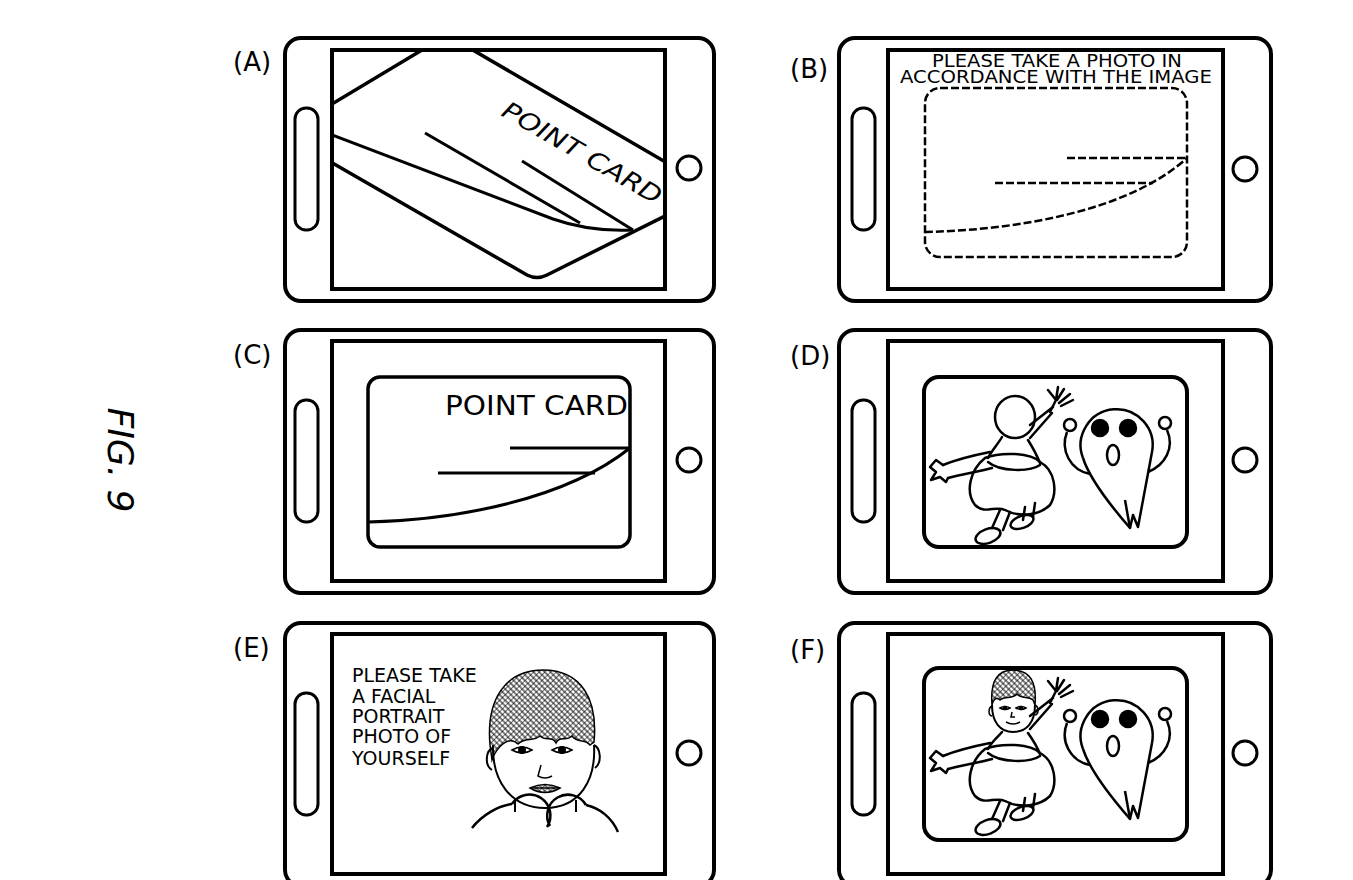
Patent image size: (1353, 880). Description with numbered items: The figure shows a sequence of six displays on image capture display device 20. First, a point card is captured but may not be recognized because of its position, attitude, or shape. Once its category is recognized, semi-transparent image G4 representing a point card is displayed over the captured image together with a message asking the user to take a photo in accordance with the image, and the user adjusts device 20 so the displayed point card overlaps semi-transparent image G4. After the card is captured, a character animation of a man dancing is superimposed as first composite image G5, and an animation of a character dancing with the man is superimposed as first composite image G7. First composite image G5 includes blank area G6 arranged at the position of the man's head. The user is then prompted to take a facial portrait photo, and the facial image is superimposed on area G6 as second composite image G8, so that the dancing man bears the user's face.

The image capture display device 20 is at (714, 117).
The semi-transparent image G4 is at (1187, 238).
The first composite image G5 is at (1002, 497).
The blank area G6 is at (1008, 427).
The first composite image G7 is at (1133, 497).
The second composite image G8 is at (995, 717).